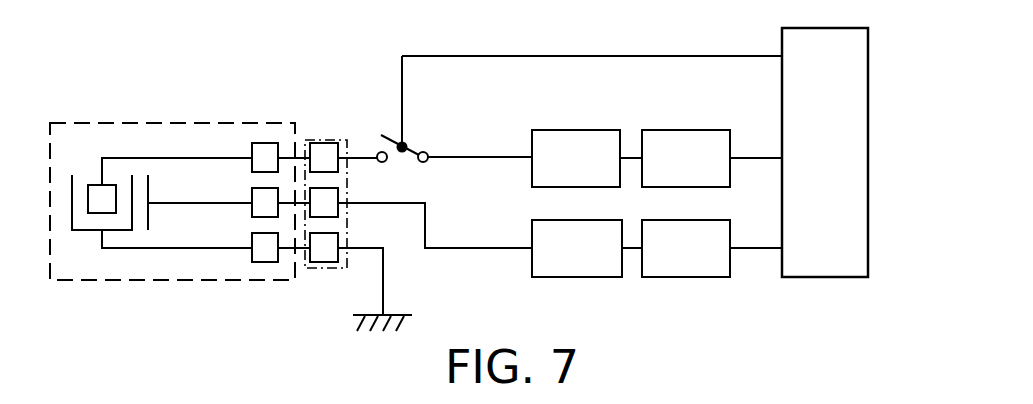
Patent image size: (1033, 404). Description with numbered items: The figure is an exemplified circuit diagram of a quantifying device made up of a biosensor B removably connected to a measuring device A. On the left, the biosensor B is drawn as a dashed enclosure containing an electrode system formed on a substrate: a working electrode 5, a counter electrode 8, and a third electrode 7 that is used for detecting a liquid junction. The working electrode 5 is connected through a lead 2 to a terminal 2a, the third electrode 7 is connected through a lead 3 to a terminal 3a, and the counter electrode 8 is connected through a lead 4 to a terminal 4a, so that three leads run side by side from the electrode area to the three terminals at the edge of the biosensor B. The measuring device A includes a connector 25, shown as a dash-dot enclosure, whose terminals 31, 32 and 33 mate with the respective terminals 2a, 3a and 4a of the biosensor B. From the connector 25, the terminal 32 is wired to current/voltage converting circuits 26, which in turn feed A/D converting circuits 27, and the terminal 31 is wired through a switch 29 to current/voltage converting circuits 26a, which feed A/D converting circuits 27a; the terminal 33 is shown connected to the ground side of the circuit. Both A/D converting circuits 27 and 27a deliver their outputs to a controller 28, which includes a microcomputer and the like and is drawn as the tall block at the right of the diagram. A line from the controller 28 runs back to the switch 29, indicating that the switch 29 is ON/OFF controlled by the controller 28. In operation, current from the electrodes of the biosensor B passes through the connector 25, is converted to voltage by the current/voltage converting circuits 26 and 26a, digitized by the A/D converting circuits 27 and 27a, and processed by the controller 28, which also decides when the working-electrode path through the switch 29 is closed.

The measuring device A is at (652, 46).
The biosensor B is at (180, 122).
The lead 2 is at (160, 158).
The terminal 2a is at (265, 152).
The lead 3 is at (195, 203).
The terminal 3a is at (255, 208).
The lead 4 is at (165, 250).
The terminal 4a is at (265, 253).
The working electrode 5 is at (90, 185).
The third electrode 7 is at (148, 230).
The counter electrode 8 is at (82, 232).
The connector 25 is at (338, 268).
The current/voltage converting circuits 26 is at (585, 278).
The current/voltage converting circuits 26a is at (588, 130).
The A/D converting circuits 27 is at (688, 278).
The A/D converting circuits 27a is at (700, 130).
The controller 28 is at (825, 278).
The switch 29 is at (390, 136).
The terminal 31 is at (322, 148).
The terminal 32 is at (330, 210).
The terminal 33 is at (325, 262).